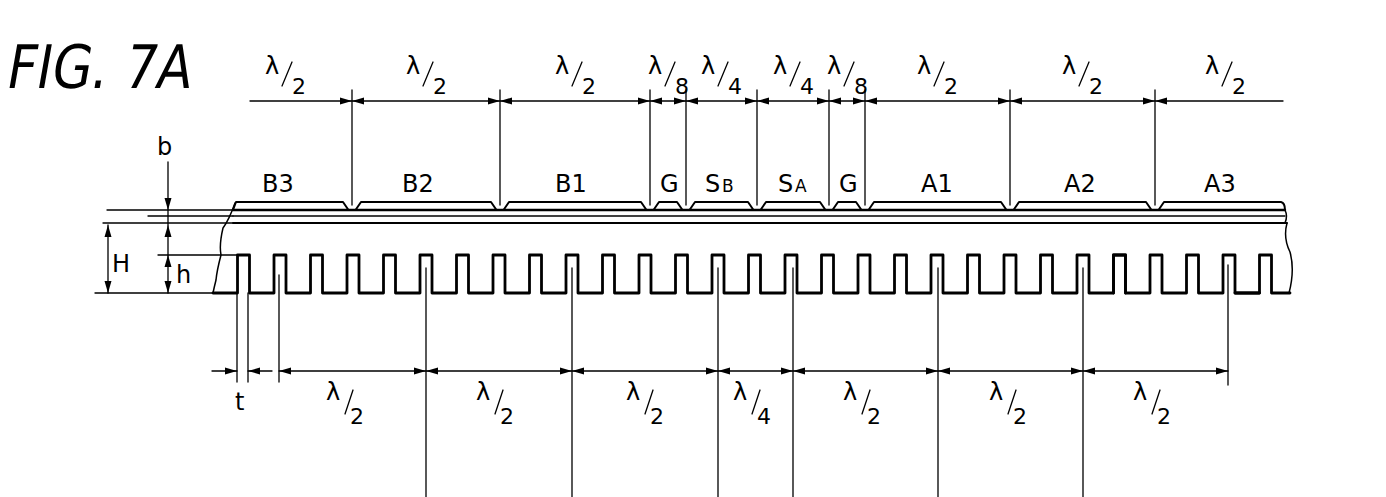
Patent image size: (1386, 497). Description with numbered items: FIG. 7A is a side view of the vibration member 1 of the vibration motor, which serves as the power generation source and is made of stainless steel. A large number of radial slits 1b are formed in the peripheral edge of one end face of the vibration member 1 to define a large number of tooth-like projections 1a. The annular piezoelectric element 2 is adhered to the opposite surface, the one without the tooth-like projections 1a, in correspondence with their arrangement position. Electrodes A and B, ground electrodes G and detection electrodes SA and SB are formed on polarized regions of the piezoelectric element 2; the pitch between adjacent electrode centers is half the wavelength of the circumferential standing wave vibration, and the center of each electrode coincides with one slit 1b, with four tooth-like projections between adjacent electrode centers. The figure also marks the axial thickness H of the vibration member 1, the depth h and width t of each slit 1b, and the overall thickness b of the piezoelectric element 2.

The vibration member 1 is at (1297, 252).
The tooth-like projections 1a is at (1250, 285).
The radial slits 1b is at (1118, 290).
The annular piezoelectric element 2 is at (1268, 203).